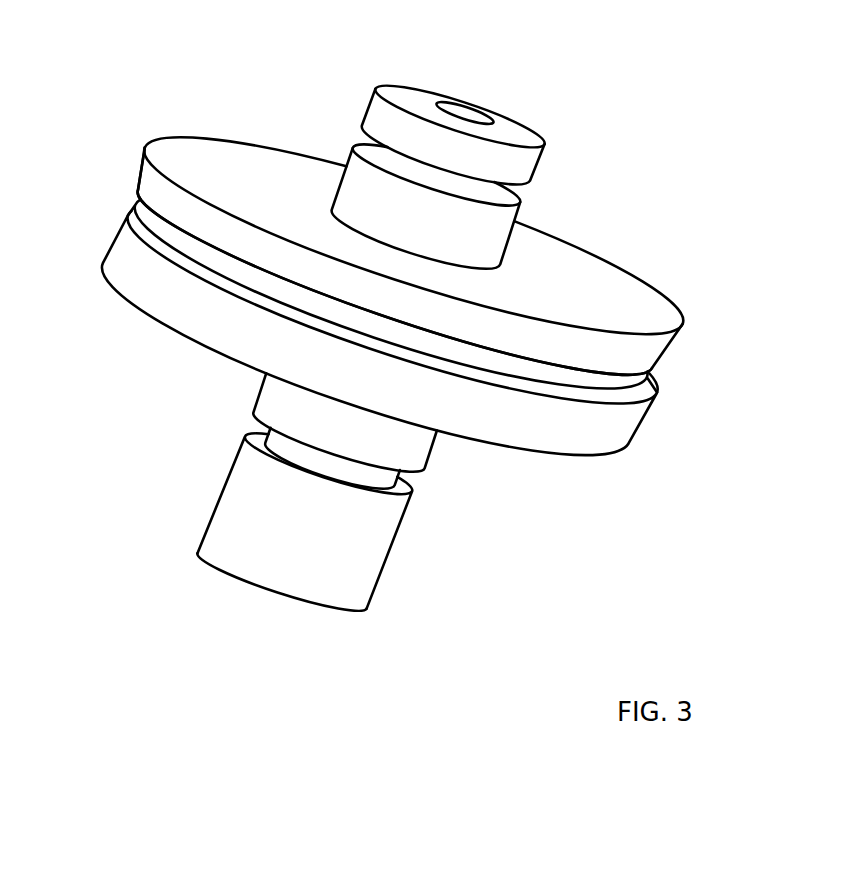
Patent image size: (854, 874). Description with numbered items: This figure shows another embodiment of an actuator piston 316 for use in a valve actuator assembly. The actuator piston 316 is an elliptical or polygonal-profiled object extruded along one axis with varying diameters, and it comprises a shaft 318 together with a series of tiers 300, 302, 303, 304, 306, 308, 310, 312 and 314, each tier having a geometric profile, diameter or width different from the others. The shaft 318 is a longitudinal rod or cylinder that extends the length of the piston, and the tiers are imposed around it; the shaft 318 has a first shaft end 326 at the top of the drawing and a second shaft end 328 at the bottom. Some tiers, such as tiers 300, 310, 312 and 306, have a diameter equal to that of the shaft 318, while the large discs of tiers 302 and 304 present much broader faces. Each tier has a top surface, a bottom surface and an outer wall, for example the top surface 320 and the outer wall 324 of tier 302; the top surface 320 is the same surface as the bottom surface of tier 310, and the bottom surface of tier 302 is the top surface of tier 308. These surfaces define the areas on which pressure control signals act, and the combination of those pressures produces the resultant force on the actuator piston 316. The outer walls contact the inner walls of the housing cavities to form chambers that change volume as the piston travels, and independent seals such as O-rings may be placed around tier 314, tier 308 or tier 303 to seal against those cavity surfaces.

The tier 300 is at (535, 167).
The tier 302 is at (647, 346).
The tier 303 is at (397, 480).
The tier 304 is at (640, 430).
The tier 306 is at (387, 567).
The tier 308 is at (160, 225).
The tier 310 is at (357, 182).
The tier 312 is at (270, 401).
The tier 314 is at (378, 157).
The actuator piston 316 is at (250, 128).
The shaft 318 is at (470, 109).
The top surface 320 is at (577, 263).
The outer wall 324 is at (152, 185).
The first shaft end 326 is at (420, 98).
The second shaft end 328 is at (261, 595).